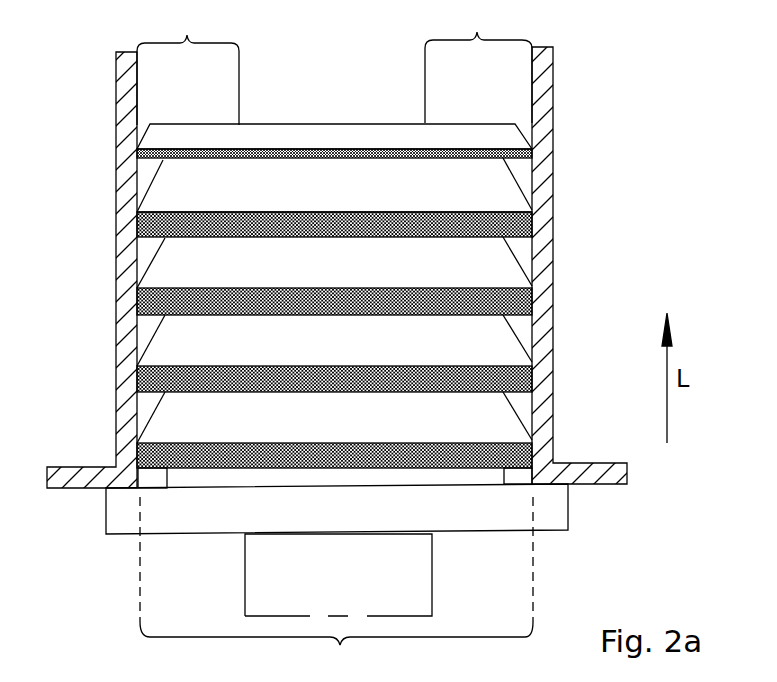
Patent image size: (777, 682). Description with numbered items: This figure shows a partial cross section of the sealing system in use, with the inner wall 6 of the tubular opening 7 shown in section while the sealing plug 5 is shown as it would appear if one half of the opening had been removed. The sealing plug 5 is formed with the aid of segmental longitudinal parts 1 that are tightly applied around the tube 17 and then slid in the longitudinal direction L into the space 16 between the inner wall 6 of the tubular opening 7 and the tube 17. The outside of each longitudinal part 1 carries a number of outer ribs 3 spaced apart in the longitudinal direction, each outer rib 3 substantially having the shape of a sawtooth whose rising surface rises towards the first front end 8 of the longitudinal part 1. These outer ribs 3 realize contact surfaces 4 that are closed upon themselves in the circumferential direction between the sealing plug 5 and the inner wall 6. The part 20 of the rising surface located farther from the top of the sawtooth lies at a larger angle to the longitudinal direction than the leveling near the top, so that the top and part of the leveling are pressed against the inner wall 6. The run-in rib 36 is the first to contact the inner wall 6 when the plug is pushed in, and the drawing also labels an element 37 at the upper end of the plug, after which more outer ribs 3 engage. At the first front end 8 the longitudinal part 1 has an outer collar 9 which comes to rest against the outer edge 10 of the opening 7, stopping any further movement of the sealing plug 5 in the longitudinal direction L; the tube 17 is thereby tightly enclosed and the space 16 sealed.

The longitudinal part 1 is at (356, 295).
The outer rib 3 is at (406, 180).
The contact surface 4 is at (182, 227).
The sealing plug 5 is at (499, 264).
The inner wall 6 is at (137, 77).
The tubular opening 7 is at (336, 585).
The first front end 8 is at (483, 532).
The outer collar 9 is at (123, 515).
The outer edge 10 is at (67, 488).
The space 16 is at (334, 66).
The tube 17 is at (348, 89).
The part of the rising surface 20 is at (375, 193).
The run-in rib 36 is at (497, 133).
The clamping element 37 is at (477, 123).